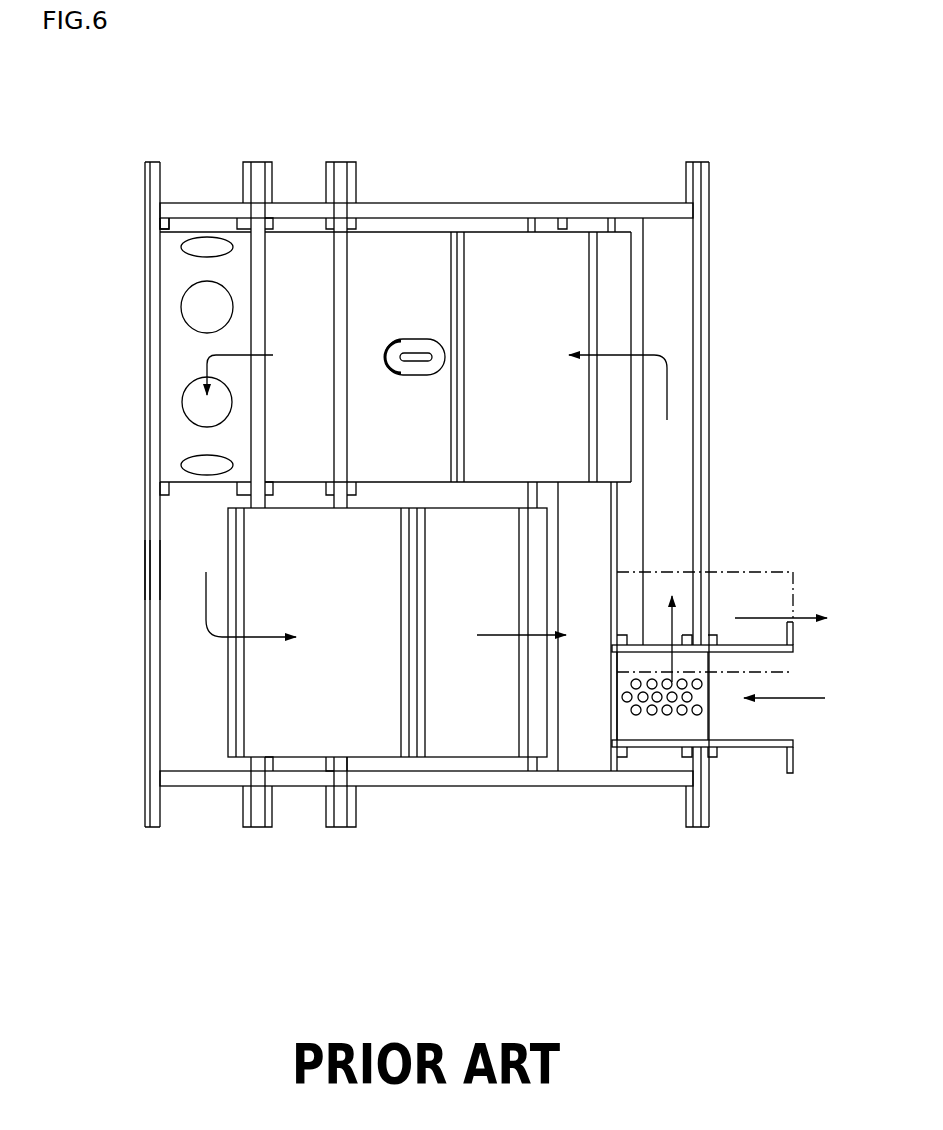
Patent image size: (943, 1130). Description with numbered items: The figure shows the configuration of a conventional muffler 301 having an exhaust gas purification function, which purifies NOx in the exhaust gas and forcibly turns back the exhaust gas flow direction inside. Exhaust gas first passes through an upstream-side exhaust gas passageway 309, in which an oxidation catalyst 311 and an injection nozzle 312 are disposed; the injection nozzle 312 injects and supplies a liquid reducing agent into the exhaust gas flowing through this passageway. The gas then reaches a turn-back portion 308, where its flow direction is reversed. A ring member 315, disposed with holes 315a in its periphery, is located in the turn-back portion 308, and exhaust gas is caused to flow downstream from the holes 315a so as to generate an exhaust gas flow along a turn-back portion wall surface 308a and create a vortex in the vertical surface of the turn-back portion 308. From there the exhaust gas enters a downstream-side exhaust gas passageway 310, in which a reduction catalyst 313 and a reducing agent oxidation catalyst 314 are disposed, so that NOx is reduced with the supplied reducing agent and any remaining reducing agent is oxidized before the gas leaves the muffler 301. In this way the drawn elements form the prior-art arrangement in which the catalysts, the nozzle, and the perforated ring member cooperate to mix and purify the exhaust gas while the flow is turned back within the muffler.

The muffler 301 is at (715, 137).
The turn-back portion 308 is at (173, 553).
The turn-back portion wall surface 308a is at (194, 224).
The upstream-side exhaust gas passageway 309 is at (402, 242).
The downstream-side exhaust gas passageway 310 is at (407, 757).
The oxidation catalyst 311 is at (570, 242).
The injection nozzle 312 is at (411, 378).
The reduction catalyst 313 is at (310, 733).
The reducing agent oxidation catalyst 314 is at (487, 740).
The ring member 315 is at (173, 358).
The holes 315a is at (198, 302).